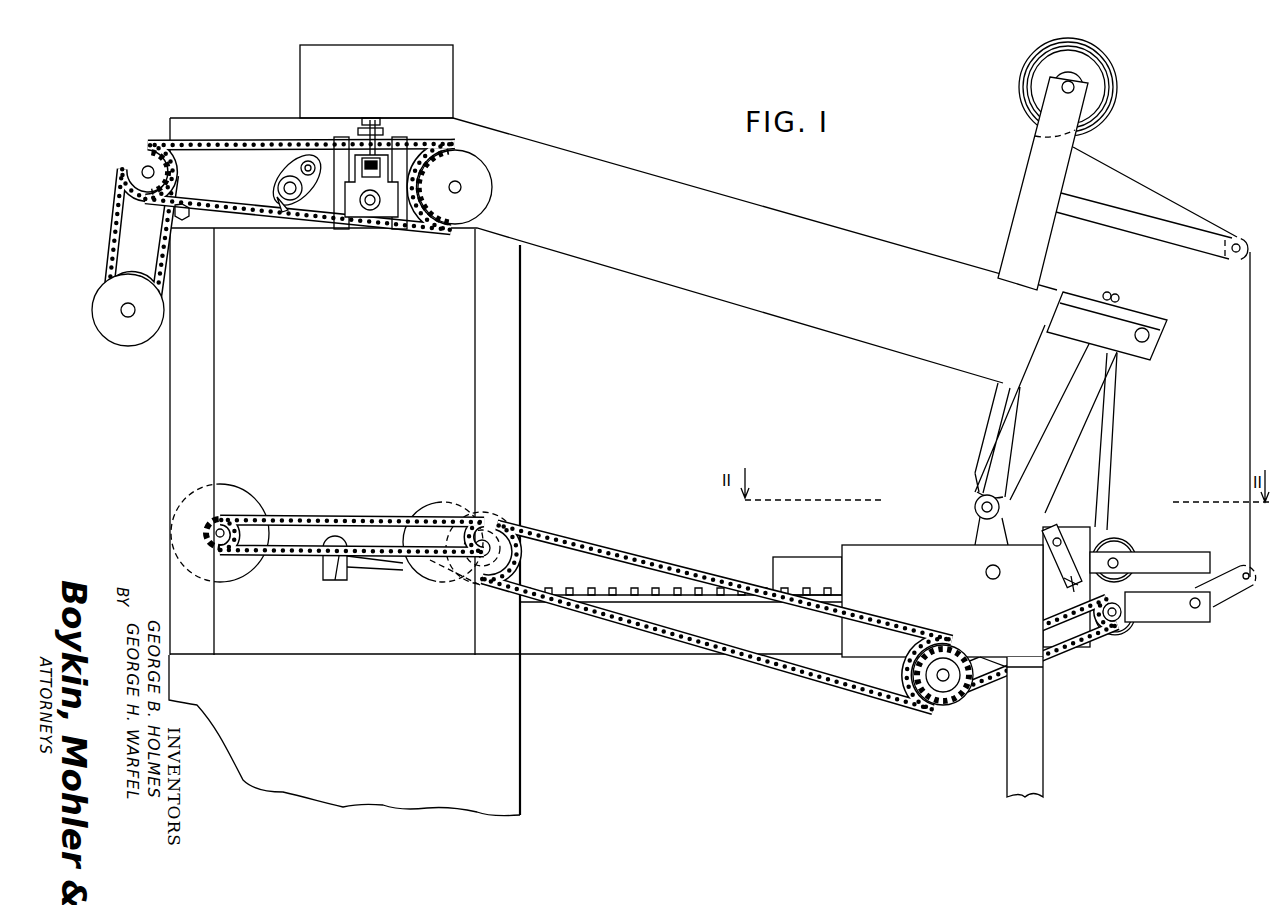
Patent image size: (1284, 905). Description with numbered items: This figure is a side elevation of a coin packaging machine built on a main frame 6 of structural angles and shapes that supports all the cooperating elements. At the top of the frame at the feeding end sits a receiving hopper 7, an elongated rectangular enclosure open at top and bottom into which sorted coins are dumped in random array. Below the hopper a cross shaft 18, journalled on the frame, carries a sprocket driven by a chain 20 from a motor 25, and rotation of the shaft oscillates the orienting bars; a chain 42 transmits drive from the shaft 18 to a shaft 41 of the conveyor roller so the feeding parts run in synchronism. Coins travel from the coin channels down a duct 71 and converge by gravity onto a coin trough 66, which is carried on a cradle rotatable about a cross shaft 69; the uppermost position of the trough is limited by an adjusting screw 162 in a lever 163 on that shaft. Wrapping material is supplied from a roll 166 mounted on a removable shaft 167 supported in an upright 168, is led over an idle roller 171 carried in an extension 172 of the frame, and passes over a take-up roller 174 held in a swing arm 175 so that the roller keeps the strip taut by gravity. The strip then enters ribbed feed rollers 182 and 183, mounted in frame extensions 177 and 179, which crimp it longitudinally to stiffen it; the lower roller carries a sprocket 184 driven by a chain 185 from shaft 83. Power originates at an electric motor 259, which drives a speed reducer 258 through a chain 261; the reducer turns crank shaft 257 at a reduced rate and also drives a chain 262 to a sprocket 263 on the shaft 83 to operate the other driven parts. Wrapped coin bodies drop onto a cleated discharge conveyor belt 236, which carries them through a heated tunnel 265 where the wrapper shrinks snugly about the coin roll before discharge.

The main frame 6 is at (170, 433).
The receiving hopper 7 is at (444, 90).
The cross shaft 18 is at (138, 172).
The chain 20 is at (113, 223).
The motor 25 is at (105, 288).
The shaft 41 is at (452, 193).
The chain 42 is at (320, 215).
The coin trough 66 is at (975, 504).
The cross shaft 69 is at (1062, 533).
The duct 71 is at (1003, 408).
The shaft 83 is at (947, 683).
The adjusting screw 162 is at (1097, 525).
The lever 163 is at (1066, 572).
The roll 166 is at (1118, 70).
The shaft 167 is at (1060, 80).
The upright 168 is at (1030, 162).
The idle roller 171 is at (1233, 260).
The extension 172 is at (1170, 238).
The take-up roller 174 is at (1243, 566).
The swing arm 175 is at (1216, 602).
The extension 177 is at (1160, 552).
The extension 179 is at (1183, 622).
The roller 182 is at (1125, 540).
The roller 183 is at (1124, 630).
The sprocket 184 is at (1100, 636).
The chain 185 is at (1057, 650).
The discharge conveyor belt 236 is at (642, 590).
The shaft 257 is at (438, 490).
The speed reducer 258 is at (437, 487).
The electric motor 259 is at (235, 497).
The chain 261 is at (315, 517).
The chain 262 is at (640, 558).
The sprocket 263 is at (922, 696).
The heated tunnel 265 is at (797, 560).